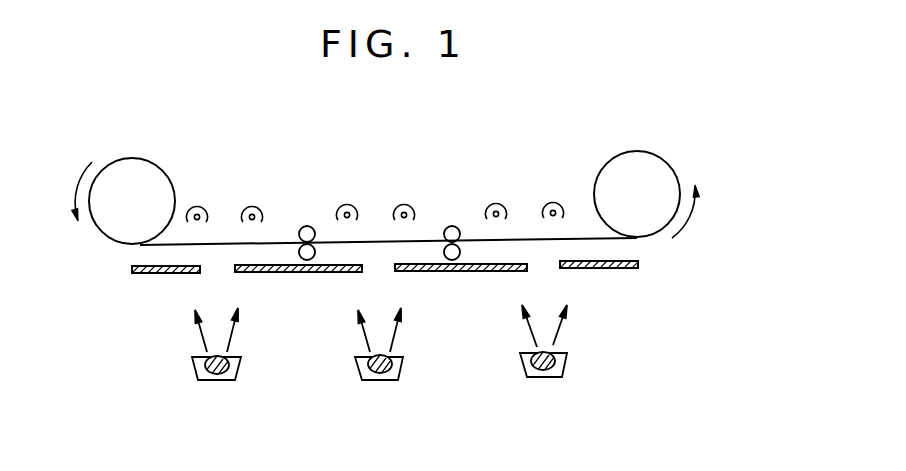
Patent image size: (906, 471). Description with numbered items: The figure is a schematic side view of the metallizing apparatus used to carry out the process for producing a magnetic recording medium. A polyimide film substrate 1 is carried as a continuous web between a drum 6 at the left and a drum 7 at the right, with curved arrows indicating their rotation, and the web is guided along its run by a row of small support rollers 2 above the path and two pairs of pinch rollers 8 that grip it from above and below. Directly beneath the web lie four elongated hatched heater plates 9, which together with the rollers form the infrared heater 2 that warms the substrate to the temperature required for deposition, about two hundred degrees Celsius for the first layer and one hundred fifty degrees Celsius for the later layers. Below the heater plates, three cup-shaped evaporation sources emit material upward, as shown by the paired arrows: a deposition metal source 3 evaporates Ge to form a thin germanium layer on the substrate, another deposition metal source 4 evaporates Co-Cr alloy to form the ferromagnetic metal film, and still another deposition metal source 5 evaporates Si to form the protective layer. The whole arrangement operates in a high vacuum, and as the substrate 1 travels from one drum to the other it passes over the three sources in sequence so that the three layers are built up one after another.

The polyimide film substrate 1 is at (153, 247).
The infrared heater 2 is at (200, 206).
The deposition metal source 3 is at (218, 380).
The deposition metal source 4 is at (382, 380).
The deposition metal source 5 is at (550, 377).
The left drive drum 6 is at (142, 158).
The right drive drum 7 is at (648, 152).
The pinch rollers 8 is at (307, 226).
The heater plates 9 is at (628, 268).